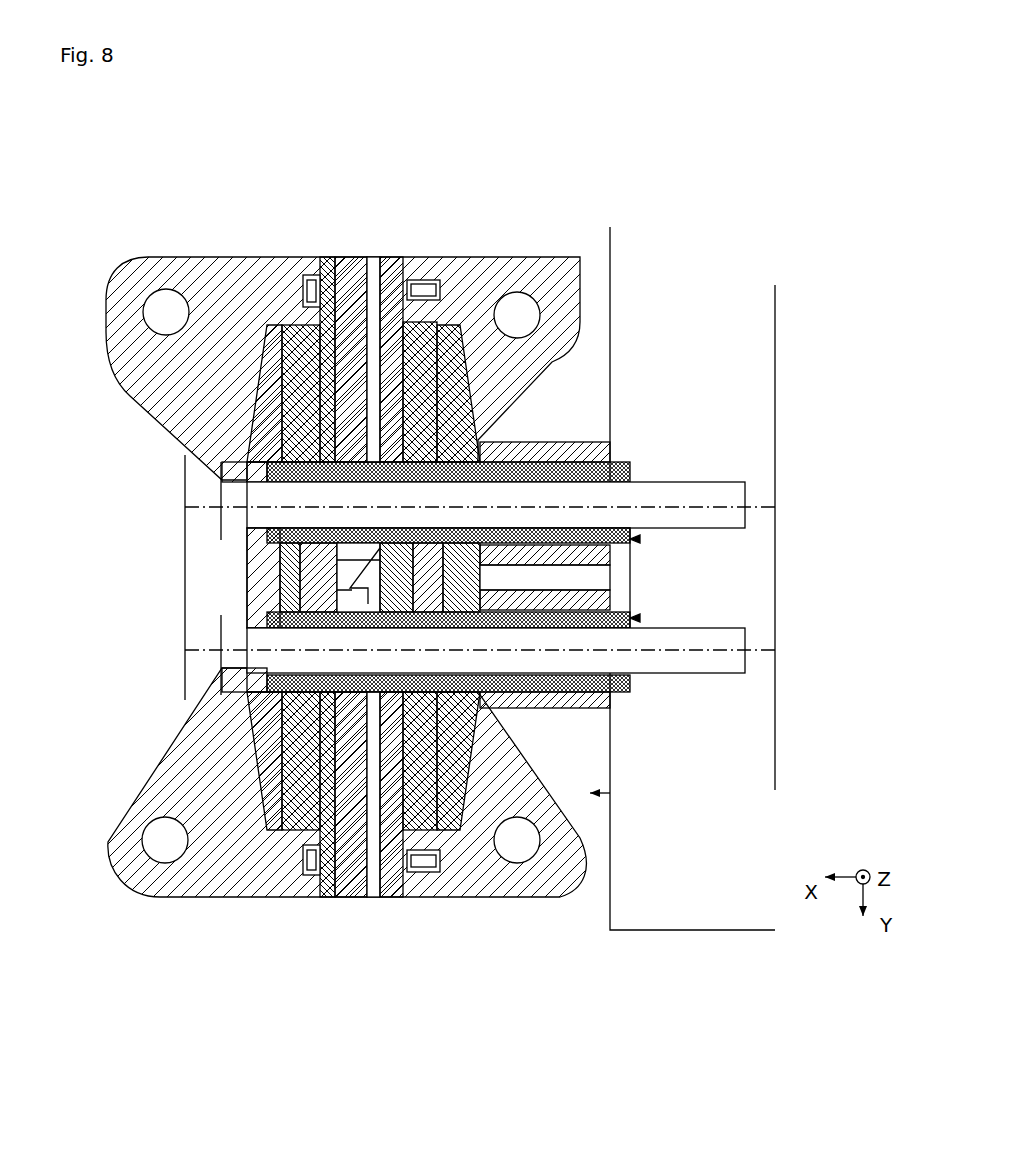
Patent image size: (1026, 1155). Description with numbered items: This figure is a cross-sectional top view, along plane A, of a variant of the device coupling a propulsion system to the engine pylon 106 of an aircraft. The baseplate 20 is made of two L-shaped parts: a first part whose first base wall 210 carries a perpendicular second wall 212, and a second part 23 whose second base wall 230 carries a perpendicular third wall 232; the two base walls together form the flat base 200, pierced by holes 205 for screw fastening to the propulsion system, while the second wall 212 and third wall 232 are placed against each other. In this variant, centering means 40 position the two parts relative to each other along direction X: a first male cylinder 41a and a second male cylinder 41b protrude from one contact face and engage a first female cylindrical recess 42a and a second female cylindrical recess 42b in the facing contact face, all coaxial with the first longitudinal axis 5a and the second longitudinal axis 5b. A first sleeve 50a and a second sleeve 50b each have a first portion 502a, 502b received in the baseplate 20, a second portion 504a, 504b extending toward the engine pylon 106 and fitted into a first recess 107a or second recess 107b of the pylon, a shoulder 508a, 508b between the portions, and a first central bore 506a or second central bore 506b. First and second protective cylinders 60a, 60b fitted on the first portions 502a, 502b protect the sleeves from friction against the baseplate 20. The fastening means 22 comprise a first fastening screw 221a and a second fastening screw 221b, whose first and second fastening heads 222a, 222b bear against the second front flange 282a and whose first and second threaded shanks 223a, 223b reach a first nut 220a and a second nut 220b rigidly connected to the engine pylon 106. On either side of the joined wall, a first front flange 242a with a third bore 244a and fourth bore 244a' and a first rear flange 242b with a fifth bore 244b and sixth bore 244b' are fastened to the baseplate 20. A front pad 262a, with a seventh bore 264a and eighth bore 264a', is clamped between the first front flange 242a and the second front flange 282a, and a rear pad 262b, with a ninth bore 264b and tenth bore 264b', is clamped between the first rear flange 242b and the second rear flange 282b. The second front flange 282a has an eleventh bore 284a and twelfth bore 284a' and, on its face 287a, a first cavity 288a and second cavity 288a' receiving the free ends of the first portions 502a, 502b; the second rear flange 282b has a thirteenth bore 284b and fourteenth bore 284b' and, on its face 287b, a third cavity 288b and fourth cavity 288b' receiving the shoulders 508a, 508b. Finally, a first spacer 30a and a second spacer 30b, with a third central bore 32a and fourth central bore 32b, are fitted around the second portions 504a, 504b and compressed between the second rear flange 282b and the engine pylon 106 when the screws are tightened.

The baseplate 20 is at (117, 730).
The fastening means 22 is at (112, 621).
The second part 23 is at (730, 835).
The centering means 40 is at (312, 1008).
The first male cylinder 41a is at (339, 897).
The second male cylinder 41b is at (352, 440).
The first female cylindrical recess 42a is at (390, 897).
The second female cylindrical recess 42b is at (368, 440).
The first sleeve 50a is at (896, 580).
The second sleeve 50b is at (640, 541).
The first protective cylinder 60a is at (160, 631).
The second protective cylinder 60b is at (247, 546).
The engine pylon 106 is at (722, 895).
The first recess 107a is at (640, 682).
The second recess 107b is at (745, 525).
The base 200 is at (170, 890).
The holes 205 is at (166, 300).
The first base wall 210 is at (170, 897).
The second wall 212 is at (350, 257).
The first nut 220a is at (640, 618).
The second nut 220b is at (705, 483).
The first fastening screw 221a is at (212, 663).
The second fastening screw 221b is at (212, 498).
The first fastening head 222a is at (247, 645).
The second fastening head 222b is at (247, 520).
The first threaded shank 223a is at (745, 670).
The second threaded shank 223b is at (745, 495).
The second base wall 230 is at (565, 890).
The third wall 232 is at (370, 257).
The first front flange 242a is at (330, 257).
The first rear flange 242b is at (413, 257).
The third bore 244a is at (305, 810).
The fifth bore 244b is at (429, 810).
The fourth bore 244a' is at (296, 347).
The sixth bore 244b' is at (446, 345).
The front pad 262a is at (262, 400).
The rear pad 262b is at (465, 340).
The seventh bore 264a is at (264, 822).
The ninth bore 264b is at (462, 826).
The eighth bore 264a' is at (225, 318).
The tenth bore 264b' is at (501, 347).
The second front flange 282a is at (180, 455).
The second rear flange 282b is at (600, 330).
The eleventh bore 284a is at (223, 879).
The thirteenth bore 284b is at (508, 892).
The twelfth bore 284a' is at (118, 260).
The fourteenth bore 284b' is at (573, 329).
The face 287a is at (267, 590).
The face 287b is at (660, 548).
The first cavity 288a is at (155, 690).
The third cavity 288b is at (716, 756).
The second cavity 288a' is at (151, 457).
The fourth cavity 288b' is at (719, 339).
The first spacer 30a is at (600, 708).
The second spacer 30b is at (600, 398).
The third central bore 32a is at (612, 605).
The fourth central bore 32b is at (605, 432).
The first portion 502a is at (267, 612).
The first portion 502b is at (247, 527).
The second portion 504a is at (612, 702).
The second portion 504b is at (610, 452).
The first central bore 506a is at (250, 840).
The second central bore 506b is at (220, 345).
The shoulder 508a is at (580, 800).
The shoulder 508b is at (730, 227).
The first longitudinal axis 5a is at (775, 650).
The second longitudinal axis 5b is at (775, 507).